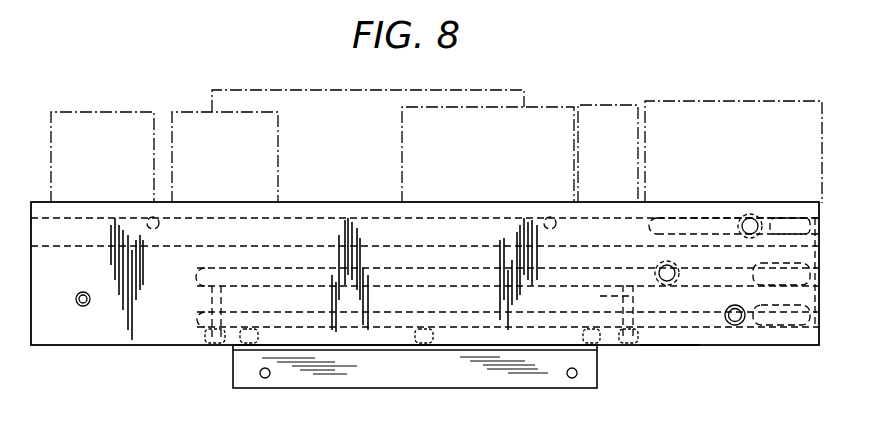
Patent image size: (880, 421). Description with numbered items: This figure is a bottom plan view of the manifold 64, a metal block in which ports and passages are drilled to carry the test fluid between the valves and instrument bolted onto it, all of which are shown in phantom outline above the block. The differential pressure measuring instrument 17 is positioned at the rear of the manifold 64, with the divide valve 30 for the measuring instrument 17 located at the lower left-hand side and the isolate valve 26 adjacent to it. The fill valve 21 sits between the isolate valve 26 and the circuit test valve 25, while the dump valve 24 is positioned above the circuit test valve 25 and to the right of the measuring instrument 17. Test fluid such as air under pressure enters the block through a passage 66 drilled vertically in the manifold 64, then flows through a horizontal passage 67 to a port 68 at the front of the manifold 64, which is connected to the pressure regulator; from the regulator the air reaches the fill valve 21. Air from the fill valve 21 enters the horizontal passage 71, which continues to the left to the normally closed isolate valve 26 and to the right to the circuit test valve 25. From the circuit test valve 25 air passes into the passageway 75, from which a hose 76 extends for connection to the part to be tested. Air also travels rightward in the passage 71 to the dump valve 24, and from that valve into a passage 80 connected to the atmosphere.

The differential pressure measuring instrument 17 is at (341, 102).
The fill valve 21 is at (547, 120).
The dump valve 24 is at (694, 108).
The circuit test valve 25 is at (605, 114).
The isolate valve 26 is at (193, 114).
The divide valve 30 is at (77, 114).
The manifold 64 is at (106, 347).
The passage 66 is at (673, 269).
The horizontal passage 67 is at (633, 268).
The port 68 is at (622, 296).
The horizontal passage 71 is at (668, 320).
The passageway 75 is at (686, 217).
The hose 76 is at (749, 218).
The passage 80 is at (79, 295).